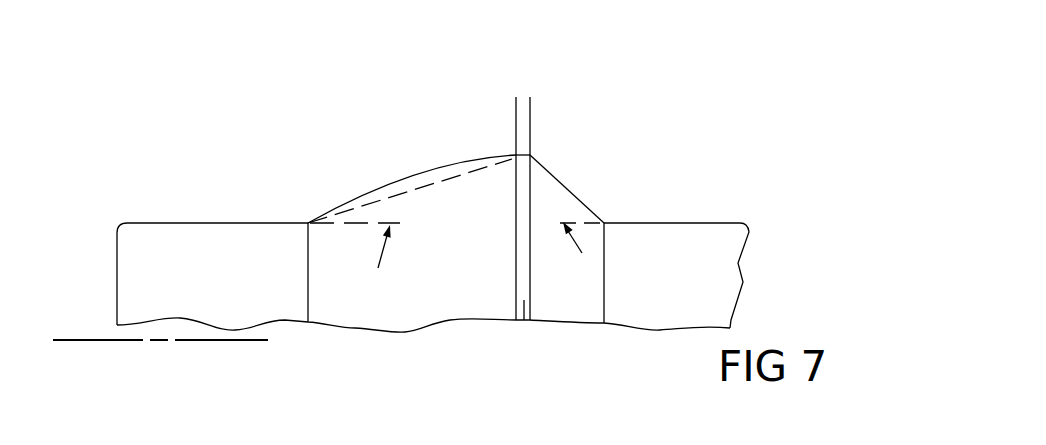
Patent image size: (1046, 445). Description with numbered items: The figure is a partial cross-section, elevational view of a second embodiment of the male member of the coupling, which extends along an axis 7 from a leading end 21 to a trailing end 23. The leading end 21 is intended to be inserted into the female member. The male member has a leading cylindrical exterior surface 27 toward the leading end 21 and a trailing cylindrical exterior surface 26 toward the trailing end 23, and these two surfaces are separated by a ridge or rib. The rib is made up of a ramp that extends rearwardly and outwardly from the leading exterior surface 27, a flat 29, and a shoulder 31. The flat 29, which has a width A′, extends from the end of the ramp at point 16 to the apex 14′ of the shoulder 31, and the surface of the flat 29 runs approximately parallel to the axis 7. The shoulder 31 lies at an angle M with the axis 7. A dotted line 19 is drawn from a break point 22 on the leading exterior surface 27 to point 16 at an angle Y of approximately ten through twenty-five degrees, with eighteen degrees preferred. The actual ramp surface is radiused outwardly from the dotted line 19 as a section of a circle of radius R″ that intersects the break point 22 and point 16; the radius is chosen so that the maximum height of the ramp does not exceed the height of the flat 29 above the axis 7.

The axis 7 is at (97, 345).
The apex of shoulder 14′ is at (530, 155).
The point 16 is at (516, 154).
The dotted line 19 is at (451, 250).
The leading end 21 is at (117, 243).
The break point 22 is at (308, 223).
The trailing end 23 is at (756, 286).
The trailing cylindrical exterior surface 26 is at (668, 223).
The leading cylindrical exterior surface 27 is at (212, 223).
The flat 29 is at (523, 313).
The shoulder 31 is at (568, 178).